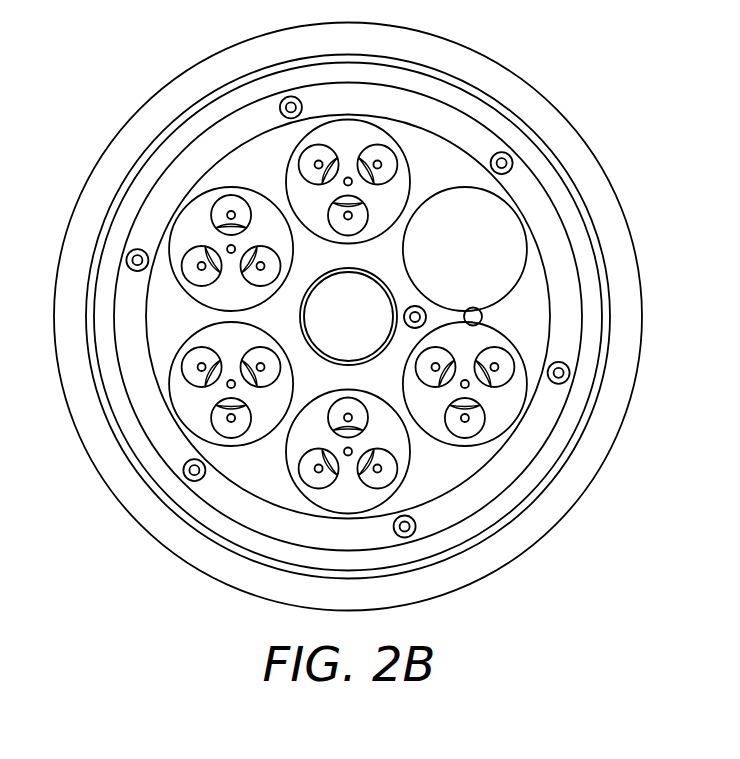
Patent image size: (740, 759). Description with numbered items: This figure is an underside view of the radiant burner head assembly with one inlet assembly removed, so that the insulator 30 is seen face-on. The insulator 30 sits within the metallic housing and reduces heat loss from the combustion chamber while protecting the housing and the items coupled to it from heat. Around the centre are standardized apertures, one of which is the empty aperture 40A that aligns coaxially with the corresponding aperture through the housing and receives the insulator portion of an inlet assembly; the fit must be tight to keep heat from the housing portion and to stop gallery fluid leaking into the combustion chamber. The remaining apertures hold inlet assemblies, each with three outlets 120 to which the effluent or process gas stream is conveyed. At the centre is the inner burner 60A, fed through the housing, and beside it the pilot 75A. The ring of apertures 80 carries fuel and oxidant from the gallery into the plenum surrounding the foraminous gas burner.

The insulator 30 is at (442, 155).
The apertures 80 is at (137, 249).
The aperture 40A is at (510, 233).
The inner burner 60A is at (381, 277).
The pilot 75A is at (424, 308).
The outlets 120 is at (212, 418).